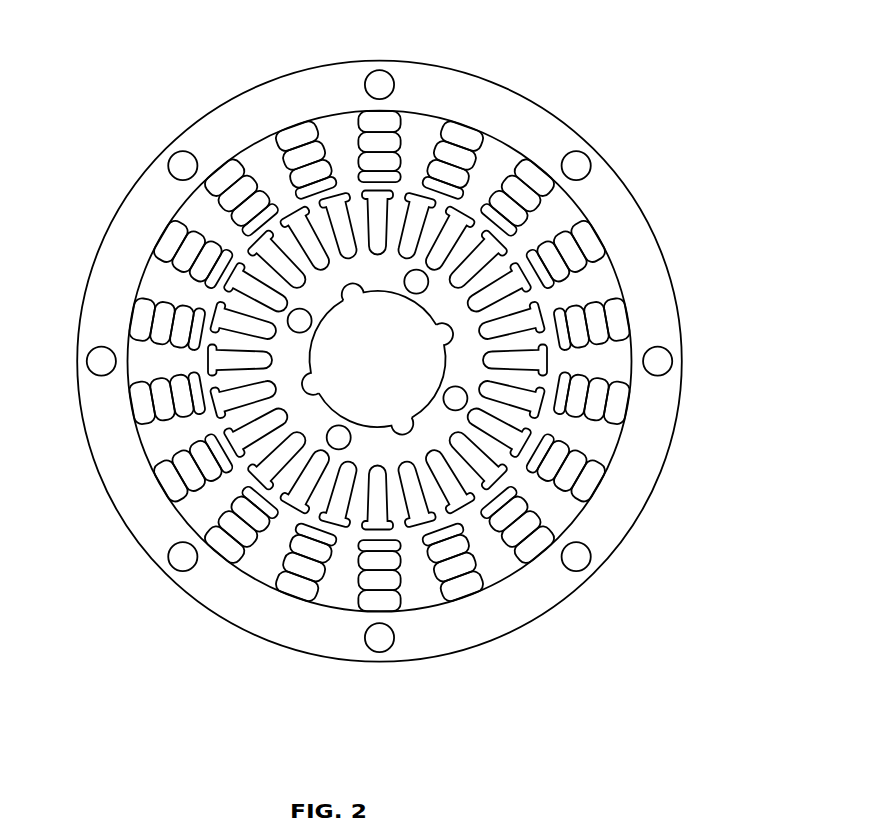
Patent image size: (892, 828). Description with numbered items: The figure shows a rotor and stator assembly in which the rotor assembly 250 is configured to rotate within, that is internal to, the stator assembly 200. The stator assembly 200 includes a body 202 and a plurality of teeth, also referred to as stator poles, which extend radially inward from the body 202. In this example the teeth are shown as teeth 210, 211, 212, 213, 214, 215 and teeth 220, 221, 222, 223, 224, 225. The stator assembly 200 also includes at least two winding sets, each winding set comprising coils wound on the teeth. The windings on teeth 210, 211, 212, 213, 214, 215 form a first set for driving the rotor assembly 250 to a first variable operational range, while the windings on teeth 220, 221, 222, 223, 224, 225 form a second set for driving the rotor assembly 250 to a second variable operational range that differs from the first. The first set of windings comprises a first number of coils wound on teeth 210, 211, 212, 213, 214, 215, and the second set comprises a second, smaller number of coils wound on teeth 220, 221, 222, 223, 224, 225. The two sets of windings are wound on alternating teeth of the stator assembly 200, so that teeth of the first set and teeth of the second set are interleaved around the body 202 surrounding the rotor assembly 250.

The stator assembly 200 is at (124, 40).
The body 202 is at (108, 286).
The tooth 210 is at (468, 130).
The tooth 211 is at (592, 230).
The tooth 212 is at (632, 410).
The tooth 213 is at (539, 560).
The tooth 214 is at (362, 615).
The tooth 215 is at (283, 130).
The tooth 220 is at (533, 163).
The tooth 221 is at (632, 333).
The tooth 222 is at (597, 490).
The tooth 223 is at (460, 605).
The tooth 224 is at (292, 592).
The tooth 225 is at (365, 118).
The rotor assembly 250 is at (360, 368).